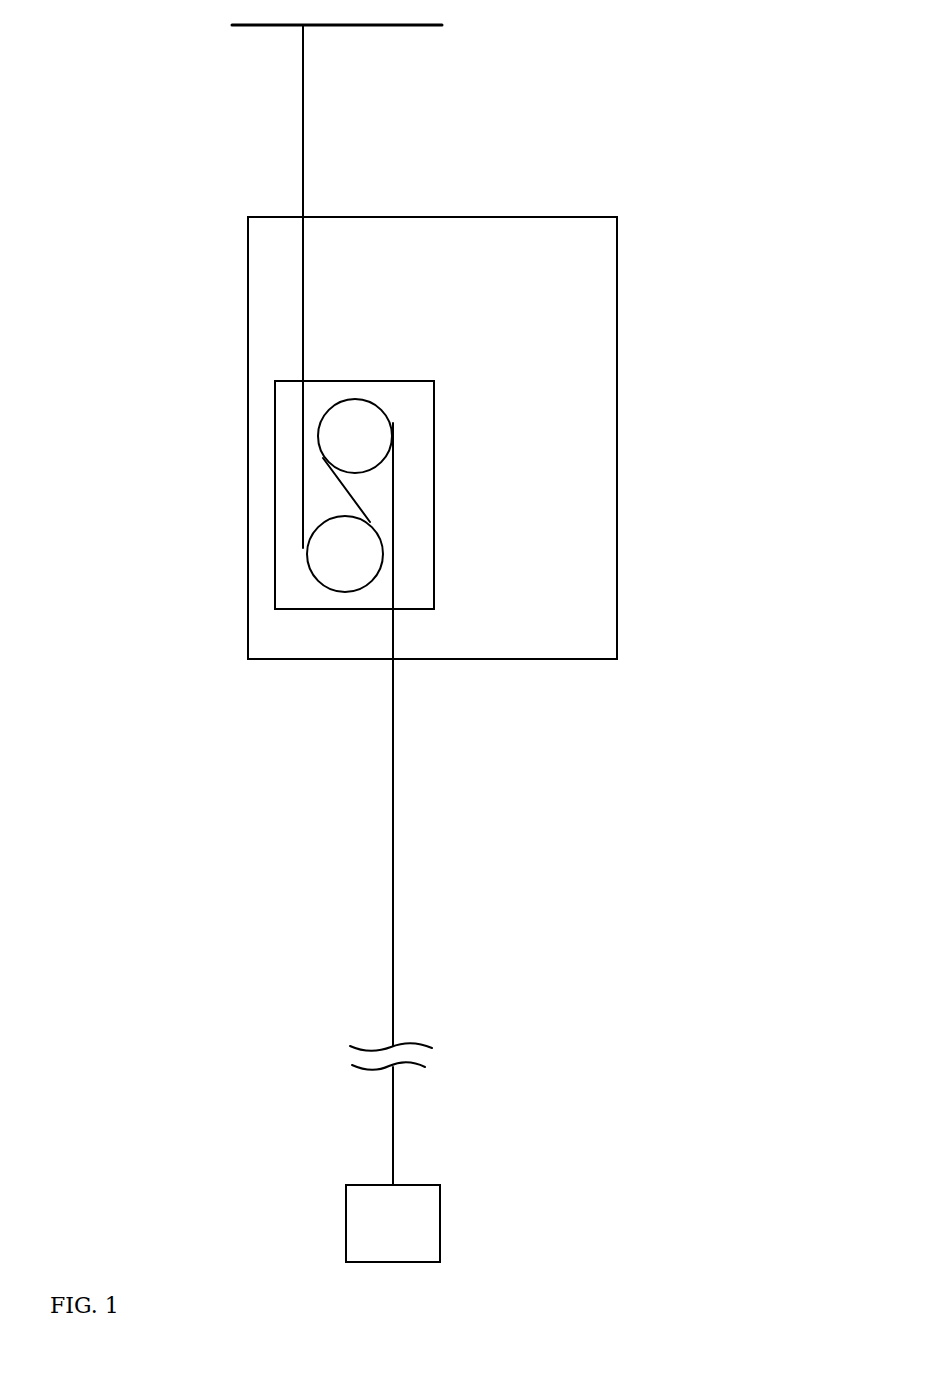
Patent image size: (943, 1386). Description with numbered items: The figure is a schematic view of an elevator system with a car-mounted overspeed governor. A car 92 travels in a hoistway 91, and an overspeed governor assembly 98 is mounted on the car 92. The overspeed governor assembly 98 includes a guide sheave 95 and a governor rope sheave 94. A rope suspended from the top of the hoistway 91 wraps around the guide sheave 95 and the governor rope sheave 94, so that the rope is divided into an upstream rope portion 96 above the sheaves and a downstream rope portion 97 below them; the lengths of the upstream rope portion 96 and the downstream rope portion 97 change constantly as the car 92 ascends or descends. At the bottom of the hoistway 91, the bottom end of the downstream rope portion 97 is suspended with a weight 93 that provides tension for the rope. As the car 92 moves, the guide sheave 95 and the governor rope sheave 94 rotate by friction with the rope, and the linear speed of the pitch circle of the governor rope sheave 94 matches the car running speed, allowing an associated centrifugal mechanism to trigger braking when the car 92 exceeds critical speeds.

The hoistway 91 is at (390, 25).
The car 92 is at (552, 398).
The weight 93 is at (425, 1223).
The governor rope sheave 94 is at (363, 423).
The guide sheave 95 is at (345, 567).
The upstream rope portion 96 is at (302, 317).
The downstream rope portion 97 is at (395, 712).
The overspeed governor assembly 98 is at (434, 482).